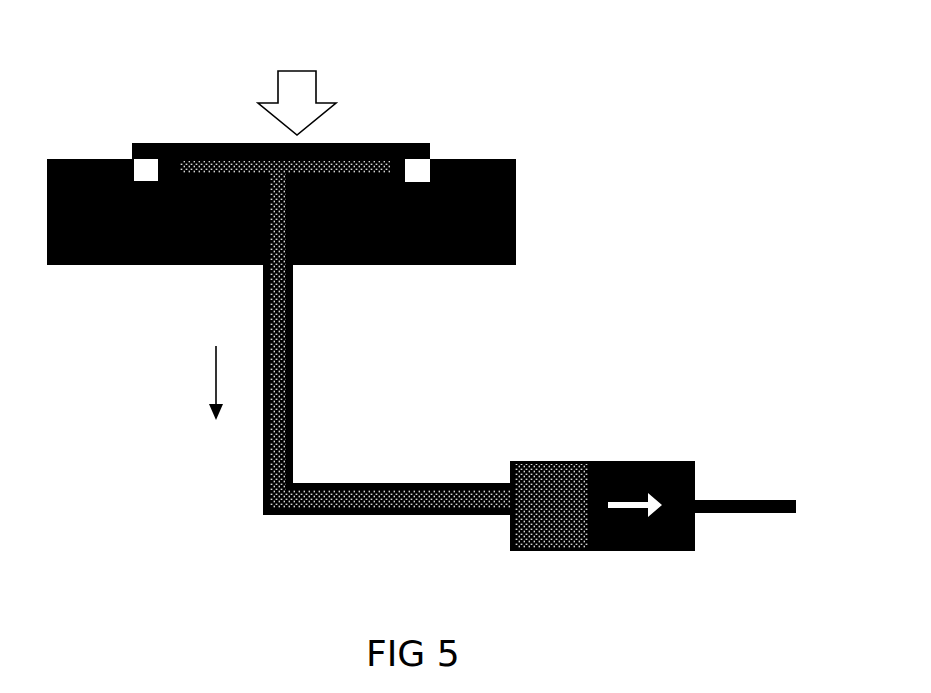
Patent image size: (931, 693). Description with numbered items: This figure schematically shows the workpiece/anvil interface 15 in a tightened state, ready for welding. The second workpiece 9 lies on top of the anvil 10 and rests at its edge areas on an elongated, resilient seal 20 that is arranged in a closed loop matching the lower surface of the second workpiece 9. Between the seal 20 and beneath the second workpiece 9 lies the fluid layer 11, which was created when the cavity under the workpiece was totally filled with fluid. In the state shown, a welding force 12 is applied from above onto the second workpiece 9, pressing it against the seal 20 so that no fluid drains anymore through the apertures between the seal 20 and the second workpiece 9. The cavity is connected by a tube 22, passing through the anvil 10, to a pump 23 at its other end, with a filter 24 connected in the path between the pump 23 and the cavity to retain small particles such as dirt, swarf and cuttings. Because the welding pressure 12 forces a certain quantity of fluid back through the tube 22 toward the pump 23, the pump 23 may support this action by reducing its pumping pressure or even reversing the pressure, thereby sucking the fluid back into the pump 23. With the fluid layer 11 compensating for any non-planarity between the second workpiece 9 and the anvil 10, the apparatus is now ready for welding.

The second workpiece 9 is at (235, 135).
The anvil 10 is at (493, 187).
The fluid layer 11 is at (377, 153).
The welding force 12 is at (297, 84).
The workpiece/anvil interface 15 is at (145, 341).
The seal 20 is at (130, 160).
The tube 22 is at (387, 344).
The pump 23 is at (562, 478).
The filter 24 is at (283, 278).